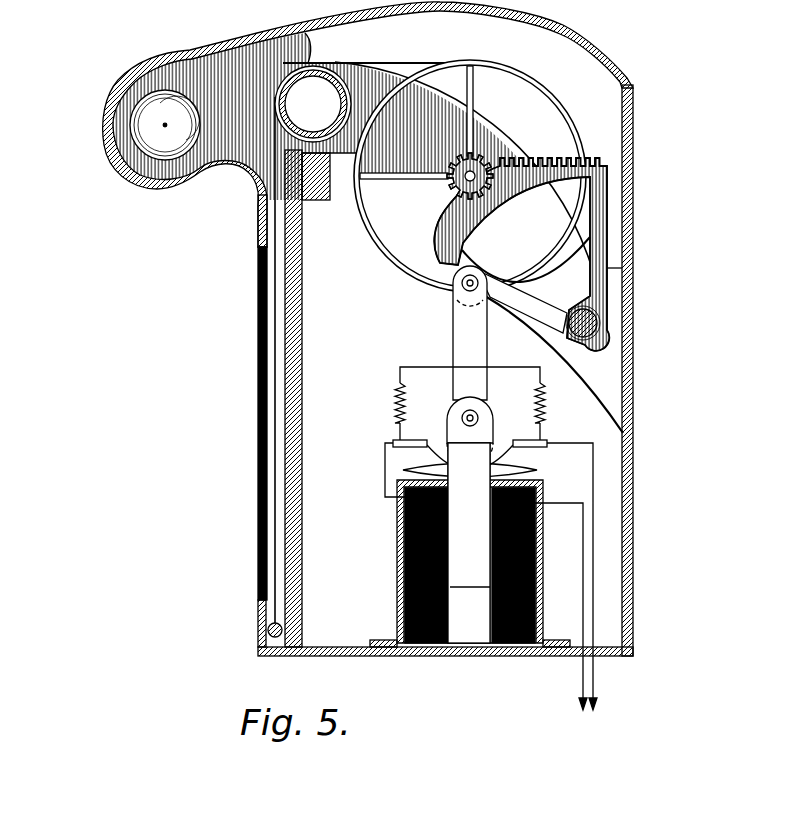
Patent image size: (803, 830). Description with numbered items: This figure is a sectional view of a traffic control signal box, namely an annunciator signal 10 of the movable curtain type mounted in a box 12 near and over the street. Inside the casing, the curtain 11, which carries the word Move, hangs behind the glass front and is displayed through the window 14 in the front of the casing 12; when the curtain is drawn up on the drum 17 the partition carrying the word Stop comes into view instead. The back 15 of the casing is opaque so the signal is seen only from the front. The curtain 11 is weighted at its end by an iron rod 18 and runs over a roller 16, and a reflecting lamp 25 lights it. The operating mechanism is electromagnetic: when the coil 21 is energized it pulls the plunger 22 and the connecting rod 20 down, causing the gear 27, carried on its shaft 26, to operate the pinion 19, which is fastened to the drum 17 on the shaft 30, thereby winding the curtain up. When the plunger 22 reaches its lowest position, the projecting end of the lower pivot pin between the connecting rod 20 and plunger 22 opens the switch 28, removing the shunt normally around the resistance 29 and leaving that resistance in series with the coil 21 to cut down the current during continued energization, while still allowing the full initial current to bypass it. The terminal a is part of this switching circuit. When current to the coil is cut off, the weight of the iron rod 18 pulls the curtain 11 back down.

The signal 10 is at (255, 482).
The curtain 11 is at (275, 345).
The box 12 is at (258, 222).
The window 14 is at (262, 307).
The back 15 is at (628, 470).
The roller 16 is at (335, 75).
The drum 17 is at (388, 250).
The iron rod 18 is at (268, 630).
The pinion 19 is at (450, 190).
The connecting rod 20 is at (465, 337).
The coil 21 is at (398, 531).
The plunger 22 is at (410, 568).
The reflecting lamp 25 is at (165, 128).
The shaft 26 is at (600, 325).
The gear 27 is at (600, 242).
The switch 28 is at (530, 452).
The resistance 29 is at (395, 406).
The shaft 30 is at (480, 170).
The contact a is at (462, 421).